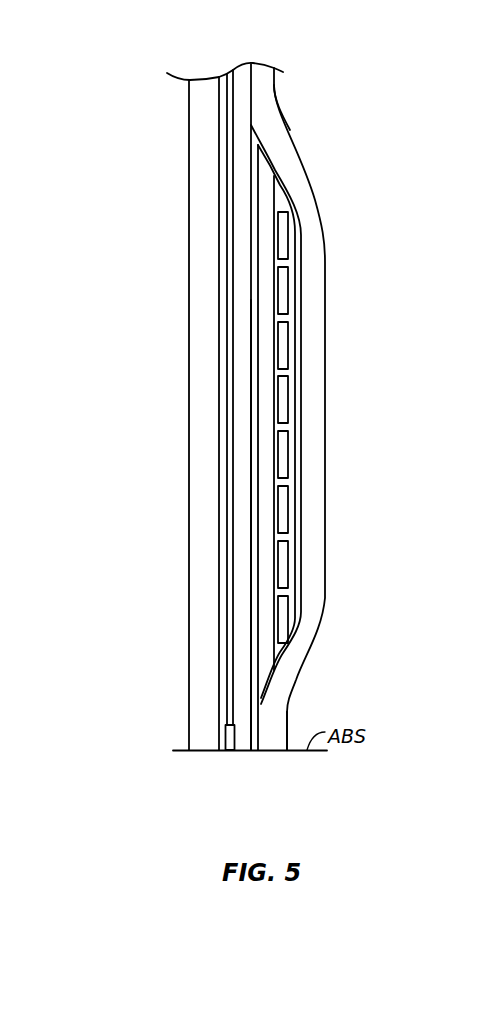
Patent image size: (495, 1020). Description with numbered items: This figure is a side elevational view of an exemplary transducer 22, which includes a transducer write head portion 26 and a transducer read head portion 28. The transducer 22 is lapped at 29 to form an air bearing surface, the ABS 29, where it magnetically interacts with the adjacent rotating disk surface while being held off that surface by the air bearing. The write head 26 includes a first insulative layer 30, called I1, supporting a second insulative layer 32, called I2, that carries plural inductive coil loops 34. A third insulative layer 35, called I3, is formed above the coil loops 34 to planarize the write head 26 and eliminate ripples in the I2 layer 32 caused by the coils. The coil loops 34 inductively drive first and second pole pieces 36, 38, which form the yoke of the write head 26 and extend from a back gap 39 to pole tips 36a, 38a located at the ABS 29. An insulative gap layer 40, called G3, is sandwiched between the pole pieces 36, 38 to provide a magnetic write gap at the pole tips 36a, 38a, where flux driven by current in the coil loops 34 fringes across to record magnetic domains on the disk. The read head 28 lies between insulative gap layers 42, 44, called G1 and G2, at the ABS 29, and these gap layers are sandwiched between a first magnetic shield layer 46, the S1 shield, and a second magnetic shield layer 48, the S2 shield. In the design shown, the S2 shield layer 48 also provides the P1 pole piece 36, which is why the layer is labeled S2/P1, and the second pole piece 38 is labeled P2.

The transducer 22 is at (145, 58).
The transducer write head portion 26 is at (279, 708).
The transducer read head portion 28 is at (229, 752).
The air bearing surface 29 is at (200, 752).
The first insulative layer 30 is at (262, 355).
The second insulative layer 32 is at (283, 650).
The inductive coil loops 34 is at (285, 402).
The third insulative layer 35 is at (300, 290).
The first pole piece 36 is at (174, 525).
The pole tip 36a is at (251, 752).
The second pole piece 38 is at (317, 515).
The pole tip 38a is at (276, 752).
The back gap 39 is at (276, 90).
The insulative gap layer 40 is at (259, 752).
The insulative gap layer 42 is at (221, 478).
The insulative gap layer 44 is at (237, 445).
The first magnetic shield layer 46 is at (202, 557).
The second magnetic shield layer 48 is at (242, 677).